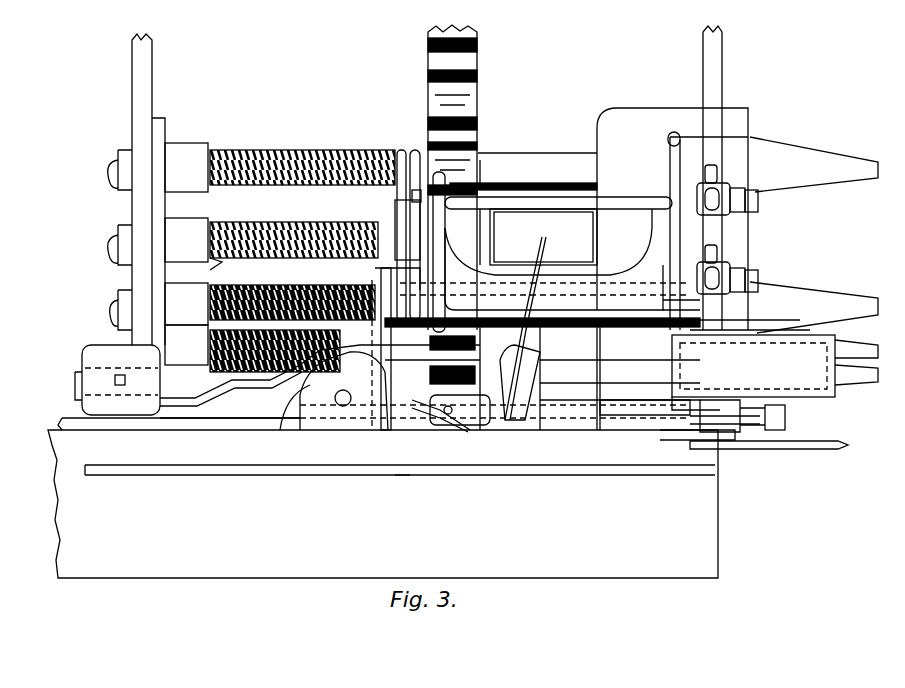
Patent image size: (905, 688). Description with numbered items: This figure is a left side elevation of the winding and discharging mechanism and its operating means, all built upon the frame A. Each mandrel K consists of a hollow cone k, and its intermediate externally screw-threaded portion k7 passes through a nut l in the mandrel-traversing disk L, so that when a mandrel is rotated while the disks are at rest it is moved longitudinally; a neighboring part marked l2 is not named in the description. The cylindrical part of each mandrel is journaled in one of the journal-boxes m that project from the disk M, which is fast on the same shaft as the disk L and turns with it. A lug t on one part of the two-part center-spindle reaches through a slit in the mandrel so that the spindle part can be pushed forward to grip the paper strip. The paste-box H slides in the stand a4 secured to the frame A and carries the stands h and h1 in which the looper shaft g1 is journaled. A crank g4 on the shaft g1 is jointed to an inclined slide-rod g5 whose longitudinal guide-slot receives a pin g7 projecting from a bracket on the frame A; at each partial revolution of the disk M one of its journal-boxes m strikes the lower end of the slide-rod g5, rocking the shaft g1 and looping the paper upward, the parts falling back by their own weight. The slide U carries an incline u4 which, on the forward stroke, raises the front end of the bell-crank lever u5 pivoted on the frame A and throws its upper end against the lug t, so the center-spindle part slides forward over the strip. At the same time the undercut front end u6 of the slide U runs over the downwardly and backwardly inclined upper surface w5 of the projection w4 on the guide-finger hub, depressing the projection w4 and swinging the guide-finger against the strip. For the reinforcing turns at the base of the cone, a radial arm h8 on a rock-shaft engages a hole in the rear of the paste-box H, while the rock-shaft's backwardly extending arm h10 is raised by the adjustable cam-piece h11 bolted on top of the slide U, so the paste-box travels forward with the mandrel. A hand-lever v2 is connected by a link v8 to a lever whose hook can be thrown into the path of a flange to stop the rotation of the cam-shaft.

The frame A is at (383, 491).
The mandrel-traversing disk L is at (148, 90).
The nut l is at (182, 217).
The lug l2 is at (220, 266).
The screw-threaded portion k7 is at (262, 183).
The backwardly extending arm h10 is at (200, 398).
The slide U is at (215, 428).
The cam-piece h11 is at (326, 425).
The radial arm h8 is at (305, 293).
The disk M is at (480, 88).
The crank g4 is at (410, 155).
The inclined slide-rod g5 is at (395, 203).
The pin g7 is at (392, 276).
The stand h is at (482, 190).
The mandrel K is at (552, 153).
The shaft g1 is at (607, 207).
The journal-box m is at (485, 152).
The lug t is at (547, 262).
The stand h1 is at (662, 182).
The hollow cone k is at (820, 153).
The paste-box H is at (836, 397).
The bell-crank lever u5 is at (537, 362).
The incline u4 is at (470, 432).
The undercut front end u6 is at (672, 433).
The stand a4 is at (700, 434).
The projection w4 is at (775, 432).
The inclined upper surface w5 is at (712, 442).
The hand-lever v2 is at (849, 445).
The link v8 is at (402, 477).